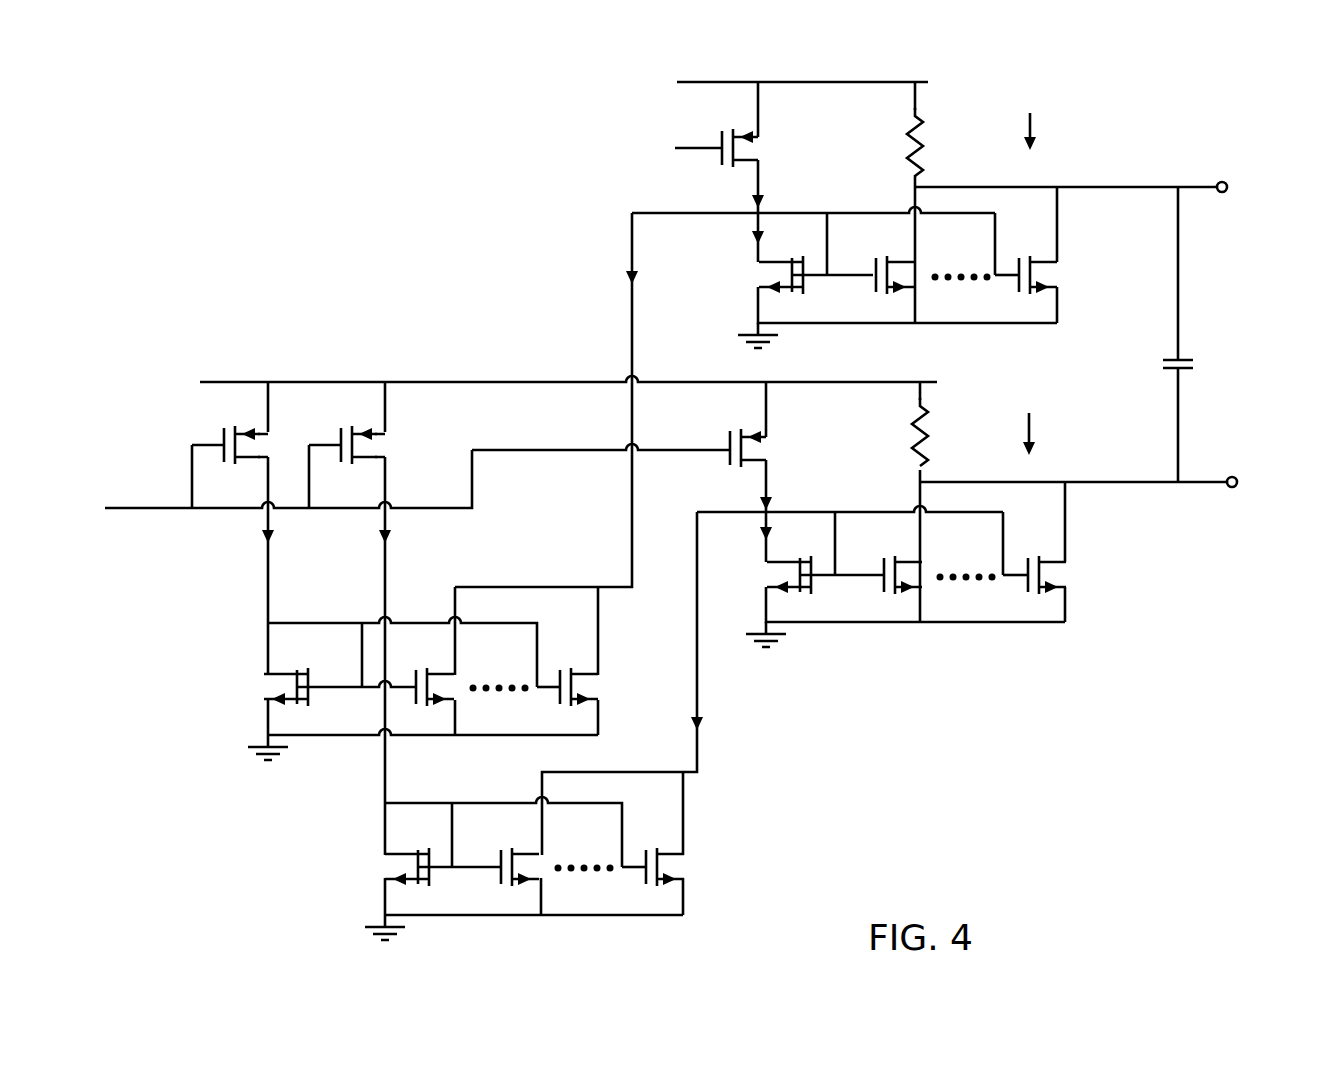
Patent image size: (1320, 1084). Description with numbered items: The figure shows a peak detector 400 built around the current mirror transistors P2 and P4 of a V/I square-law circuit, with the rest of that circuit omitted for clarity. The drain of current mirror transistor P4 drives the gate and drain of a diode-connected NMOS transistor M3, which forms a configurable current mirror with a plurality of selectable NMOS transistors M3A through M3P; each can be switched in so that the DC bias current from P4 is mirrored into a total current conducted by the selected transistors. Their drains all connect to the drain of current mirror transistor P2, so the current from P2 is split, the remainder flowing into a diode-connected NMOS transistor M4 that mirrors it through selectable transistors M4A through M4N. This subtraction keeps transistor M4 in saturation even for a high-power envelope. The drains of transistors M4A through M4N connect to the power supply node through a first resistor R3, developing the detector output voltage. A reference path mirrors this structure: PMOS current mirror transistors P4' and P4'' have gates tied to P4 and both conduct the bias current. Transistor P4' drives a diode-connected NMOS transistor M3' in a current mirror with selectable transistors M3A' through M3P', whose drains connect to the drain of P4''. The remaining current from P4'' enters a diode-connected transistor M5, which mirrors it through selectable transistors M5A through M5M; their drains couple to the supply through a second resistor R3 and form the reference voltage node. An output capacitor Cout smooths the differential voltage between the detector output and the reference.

The peak detector 400 is at (563, 75).
The current mirror transistor P2 is at (741, 148).
The first resistor R3 is at (954, 274).
The diode-connected NMOS transistor M4 is at (789, 278).
The selectable current mirror transistor M4A is at (900, 307).
The selectable current mirror transistor M4N is at (1036, 307).
The output capacitor Cout is at (1212, 334).
The current mirror transistor P4 is at (200, 445).
The PMOS current mirror transistor P4' is at (375, 445).
The PMOS current mirror transistor P4'' is at (645, 448).
The diode-connected transistor M5 is at (797, 577).
The selectable current mirror transistor M5A is at (908, 606).
The selectable current mirror transistor M5M is at (1044, 606).
The diode-connected NMOS transistor M3 is at (313, 687).
The selectable current mirror NMOS transistor M3A is at (466, 700).
The selectable current mirror NMOS transistor M3P is at (603, 687).
The diode-connected NMOS transistor M3' is at (414, 869).
The selectable current mirror NMOS transistor M3A' is at (527, 902).
The selectable current mirror NMOS transistor M3P' is at (663, 902).